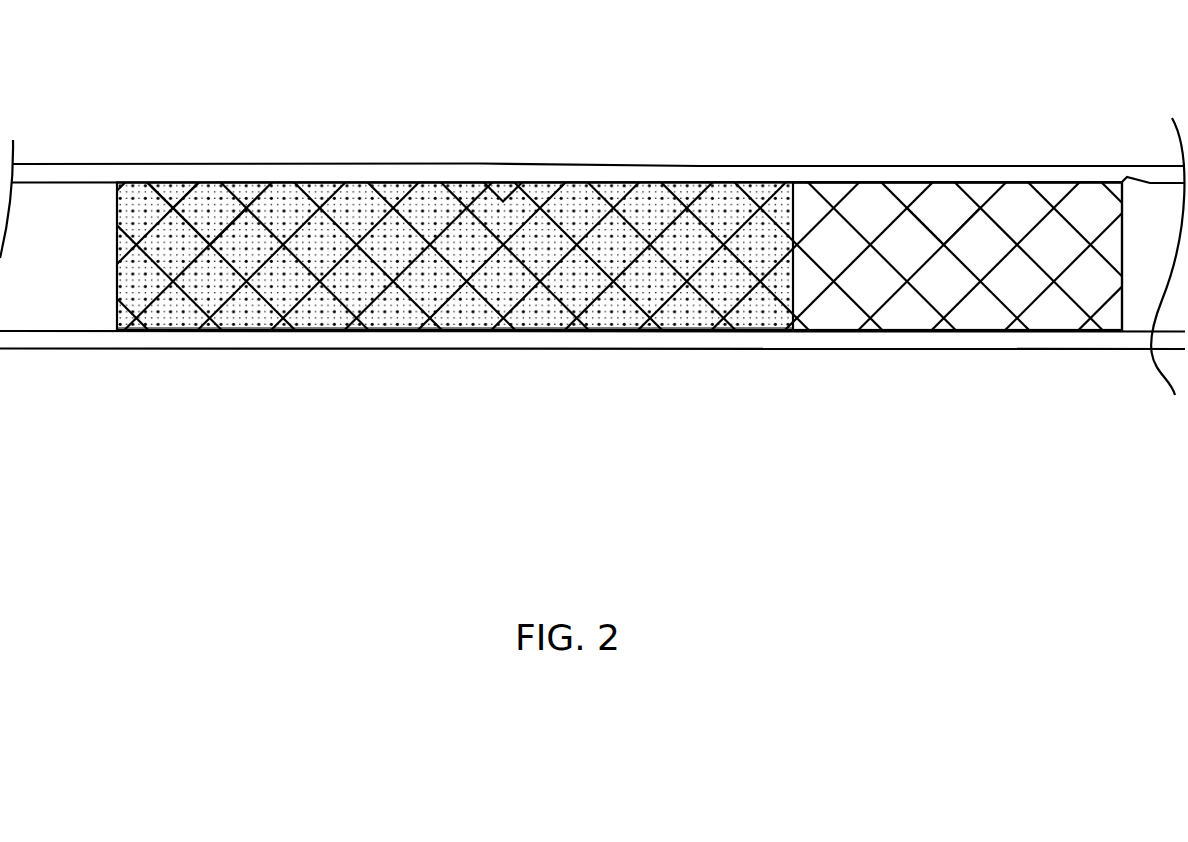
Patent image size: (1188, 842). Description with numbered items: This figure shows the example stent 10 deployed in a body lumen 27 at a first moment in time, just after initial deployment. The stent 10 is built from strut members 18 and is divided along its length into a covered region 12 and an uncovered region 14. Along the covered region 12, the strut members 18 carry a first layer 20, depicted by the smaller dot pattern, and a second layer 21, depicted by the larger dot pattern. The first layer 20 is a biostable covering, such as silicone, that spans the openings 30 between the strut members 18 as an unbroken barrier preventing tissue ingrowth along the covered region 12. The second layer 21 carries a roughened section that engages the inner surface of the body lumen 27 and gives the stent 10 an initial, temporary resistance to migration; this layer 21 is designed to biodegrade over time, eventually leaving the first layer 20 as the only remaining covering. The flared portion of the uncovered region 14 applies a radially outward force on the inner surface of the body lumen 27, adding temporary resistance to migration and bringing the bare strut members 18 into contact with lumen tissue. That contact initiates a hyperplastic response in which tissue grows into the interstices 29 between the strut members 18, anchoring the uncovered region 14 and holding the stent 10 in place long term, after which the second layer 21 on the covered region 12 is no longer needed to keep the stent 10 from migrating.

The stent 10 is at (592, 421).
The covered region 12 is at (247, 332).
The uncovered region 14 is at (987, 340).
The strut members 18 is at (323, 183).
The first layer 20 is at (393, 332).
The second layer 21 is at (555, 303).
The body lumen 27 is at (130, 173).
The interstices 29 is at (938, 205).
The openings 30 is at (213, 182).